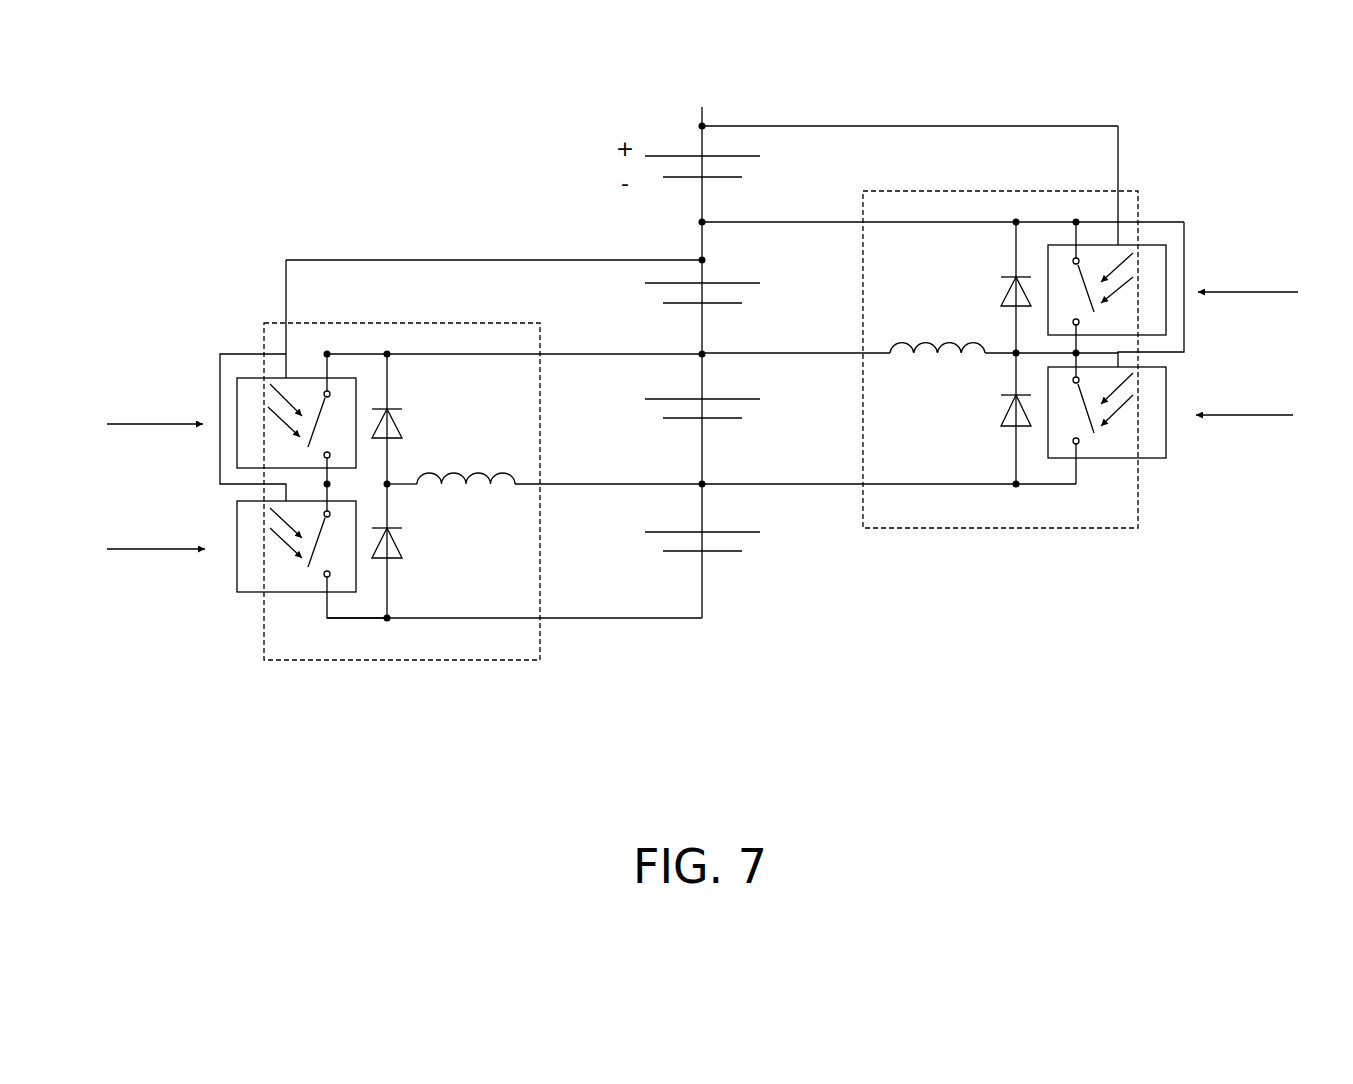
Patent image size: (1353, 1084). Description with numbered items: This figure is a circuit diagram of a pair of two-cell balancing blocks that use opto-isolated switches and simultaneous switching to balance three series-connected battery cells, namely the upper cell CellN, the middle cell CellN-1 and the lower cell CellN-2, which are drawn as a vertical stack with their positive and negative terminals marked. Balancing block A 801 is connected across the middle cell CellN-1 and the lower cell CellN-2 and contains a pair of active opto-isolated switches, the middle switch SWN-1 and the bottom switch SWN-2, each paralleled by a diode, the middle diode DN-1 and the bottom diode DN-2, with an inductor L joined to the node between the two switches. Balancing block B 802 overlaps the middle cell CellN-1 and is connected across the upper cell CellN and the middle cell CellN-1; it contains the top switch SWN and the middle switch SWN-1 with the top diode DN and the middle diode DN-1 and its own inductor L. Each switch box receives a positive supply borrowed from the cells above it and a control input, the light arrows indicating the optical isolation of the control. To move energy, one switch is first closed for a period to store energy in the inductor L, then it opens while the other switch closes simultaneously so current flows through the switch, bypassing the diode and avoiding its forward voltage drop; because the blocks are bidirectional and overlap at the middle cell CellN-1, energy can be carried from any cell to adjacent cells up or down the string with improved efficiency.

The balancing block A 801 is at (404, 502).
The balancing block B 802 is at (1003, 368).
The cell N CellN is at (719, 293).
The cell N-1 CellN-1 is at (729, 409).
The cell N-2 CellN-2 is at (732, 542).
The switch SW N SWN is at (1107, 287).
The switch SW N-1 SWN-1 is at (296, 419).
The switch SW N-2 SWN-2 is at (312, 551).
The diode D N DN is at (1004, 287).
The diode D N-1 DN-1 is at (405, 419).
The diode D N-2 DN-2 is at (405, 551).
The inductor L is at (544, 491).